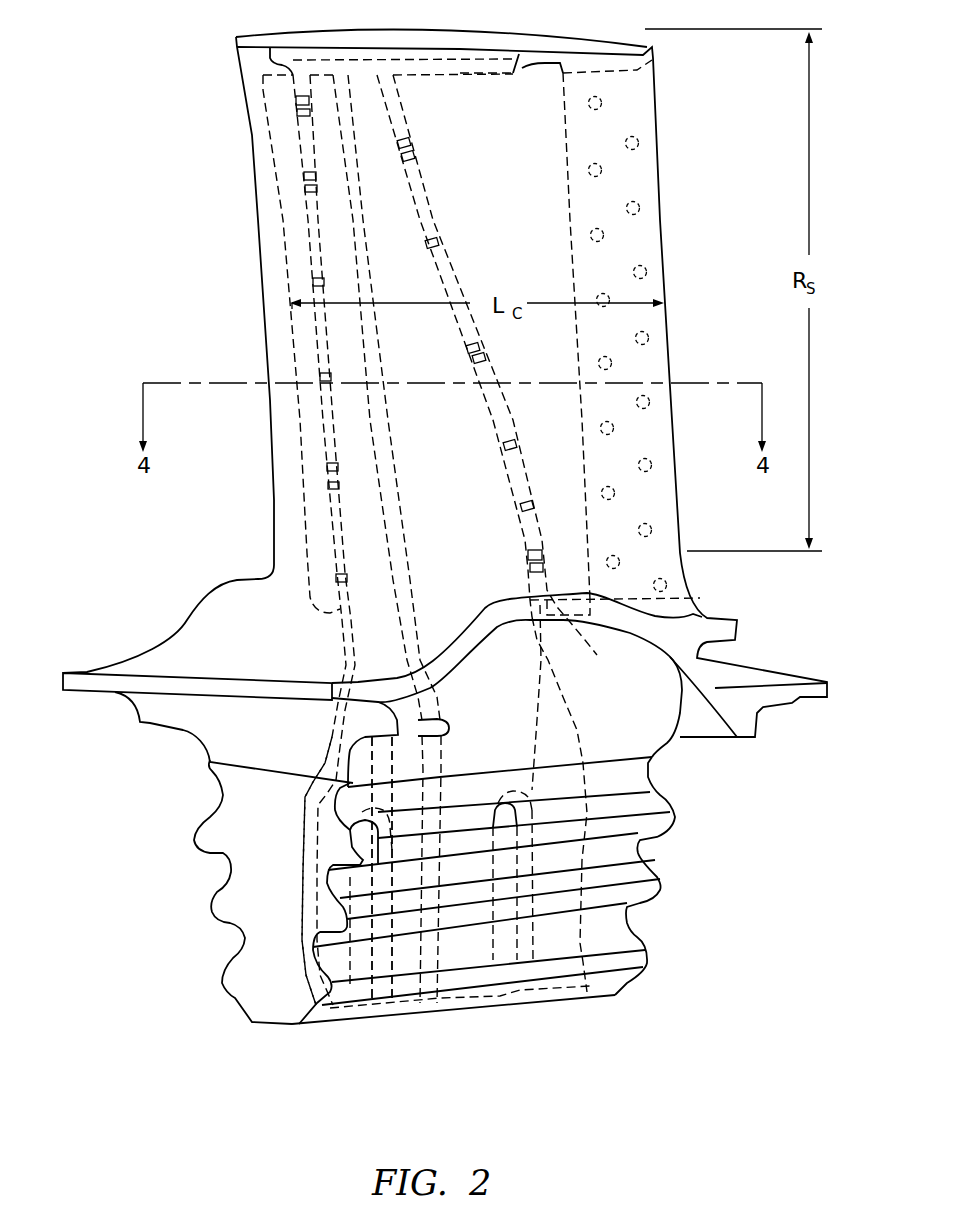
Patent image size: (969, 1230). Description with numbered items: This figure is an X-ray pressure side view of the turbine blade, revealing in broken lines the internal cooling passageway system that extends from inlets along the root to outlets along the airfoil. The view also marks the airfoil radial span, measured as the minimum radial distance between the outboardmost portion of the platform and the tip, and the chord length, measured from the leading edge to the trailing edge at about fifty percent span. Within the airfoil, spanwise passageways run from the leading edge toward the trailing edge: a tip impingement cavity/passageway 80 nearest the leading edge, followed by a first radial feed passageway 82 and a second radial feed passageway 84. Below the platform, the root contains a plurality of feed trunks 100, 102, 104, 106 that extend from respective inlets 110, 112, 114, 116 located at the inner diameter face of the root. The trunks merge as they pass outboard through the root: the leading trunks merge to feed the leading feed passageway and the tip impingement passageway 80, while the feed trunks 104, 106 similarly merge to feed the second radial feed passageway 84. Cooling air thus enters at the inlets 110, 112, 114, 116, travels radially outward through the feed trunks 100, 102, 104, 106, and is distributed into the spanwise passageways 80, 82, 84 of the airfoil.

The tip impingement cavity/passageway 80 is at (288, 271).
The first radial feed passageway 82 is at (347, 483).
The second radial feed passageway 84 is at (493, 565).
The feed trunk 100 is at (325, 958).
The feed trunk 102 is at (397, 875).
The feed trunk 104 is at (464, 870).
The feed trunk 106 is at (548, 862).
The inlet 110 is at (347, 1027).
The inlet 112 is at (407, 1020).
The inlet 114 is at (467, 1003).
The inlet 116 is at (553, 1000).